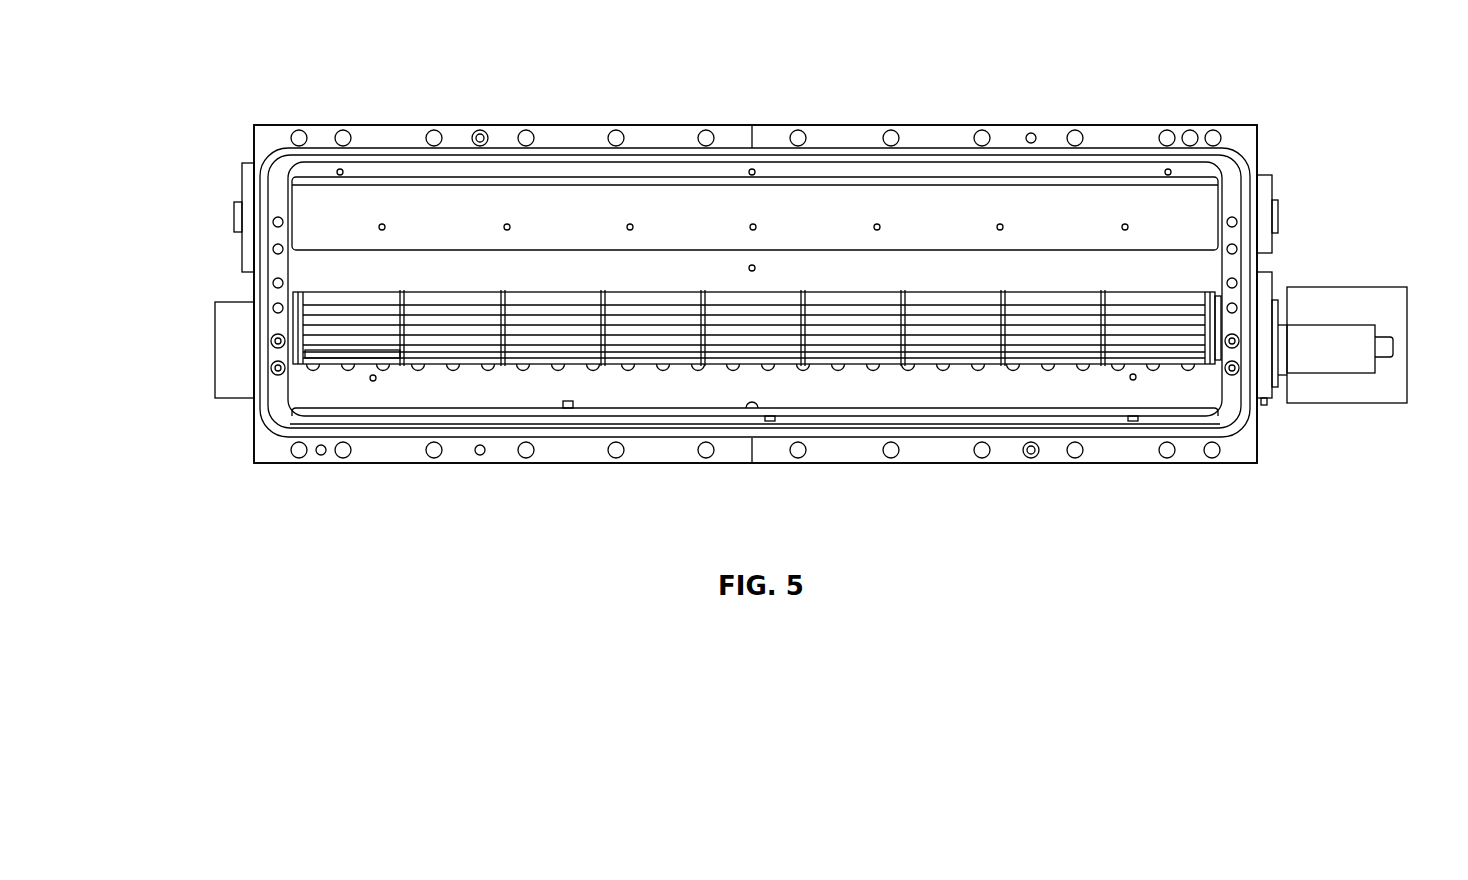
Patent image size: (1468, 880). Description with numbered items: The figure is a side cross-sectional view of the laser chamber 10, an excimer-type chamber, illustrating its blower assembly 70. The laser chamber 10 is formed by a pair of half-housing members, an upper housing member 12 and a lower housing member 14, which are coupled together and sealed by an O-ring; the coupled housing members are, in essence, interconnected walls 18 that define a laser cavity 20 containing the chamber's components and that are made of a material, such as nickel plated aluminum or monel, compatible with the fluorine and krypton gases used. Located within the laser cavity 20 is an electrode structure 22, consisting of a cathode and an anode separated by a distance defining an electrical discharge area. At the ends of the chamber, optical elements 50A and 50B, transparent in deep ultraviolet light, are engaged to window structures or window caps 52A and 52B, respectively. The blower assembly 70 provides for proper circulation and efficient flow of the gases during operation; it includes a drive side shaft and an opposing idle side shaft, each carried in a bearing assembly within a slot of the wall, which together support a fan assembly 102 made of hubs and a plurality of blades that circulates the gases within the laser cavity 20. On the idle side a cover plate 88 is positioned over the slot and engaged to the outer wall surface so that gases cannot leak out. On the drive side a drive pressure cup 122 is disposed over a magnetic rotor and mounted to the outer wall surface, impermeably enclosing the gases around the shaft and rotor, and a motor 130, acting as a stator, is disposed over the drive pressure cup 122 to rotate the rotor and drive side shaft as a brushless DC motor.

The laser chamber 10 is at (1300, 114).
The upper housing member 12 is at (246, 106).
The lower housing member 14 is at (248, 445).
The interconnected walls 18 is at (253, 290).
The laser cavity 20 is at (687, 402).
The electrode structure 22 is at (1092, 210).
The optical element 50A is at (233, 218).
The optical element 50B is at (1279, 220).
The window cap 52A is at (246, 178).
The window cap 52B is at (1264, 193).
The blower assembly 70 is at (360, 385).
The cover plate 88 is at (230, 372).
The fan assembly 102 is at (776, 306).
The drive pressure cup 122 is at (1352, 353).
The motor 130 is at (1350, 393).